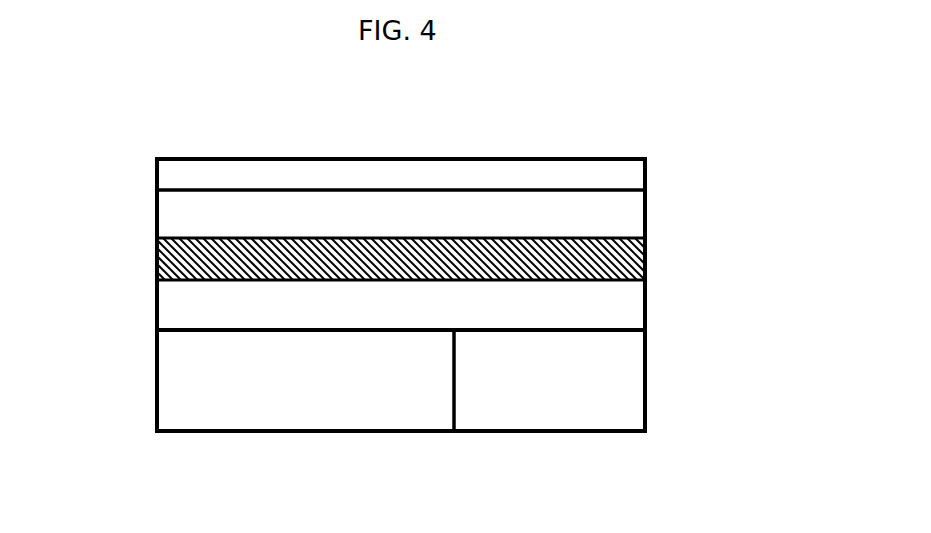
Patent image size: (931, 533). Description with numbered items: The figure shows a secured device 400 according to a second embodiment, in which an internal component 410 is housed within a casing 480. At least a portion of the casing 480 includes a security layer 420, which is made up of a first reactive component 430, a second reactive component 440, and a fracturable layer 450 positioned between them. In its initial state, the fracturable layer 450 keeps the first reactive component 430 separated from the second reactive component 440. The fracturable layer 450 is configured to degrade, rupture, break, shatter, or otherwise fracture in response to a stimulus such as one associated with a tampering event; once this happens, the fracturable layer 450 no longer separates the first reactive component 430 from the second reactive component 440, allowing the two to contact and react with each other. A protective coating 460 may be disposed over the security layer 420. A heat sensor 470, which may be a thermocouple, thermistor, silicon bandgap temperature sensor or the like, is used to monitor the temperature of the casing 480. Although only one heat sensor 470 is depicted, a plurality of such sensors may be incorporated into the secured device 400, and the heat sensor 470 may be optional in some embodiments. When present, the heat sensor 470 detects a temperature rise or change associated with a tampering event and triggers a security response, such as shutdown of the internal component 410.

The secured device 400 is at (64, 117).
The internal component 410 is at (305, 380).
The security layer 420 is at (755, 198).
The first reactive component 430 is at (617, 218).
The second reactive component 440 is at (620, 305).
The fracturable layer 450 is at (622, 262).
The protective coating 460 is at (617, 178).
The heat sensor 470 is at (549, 380).
The casing 480 is at (144, 157).